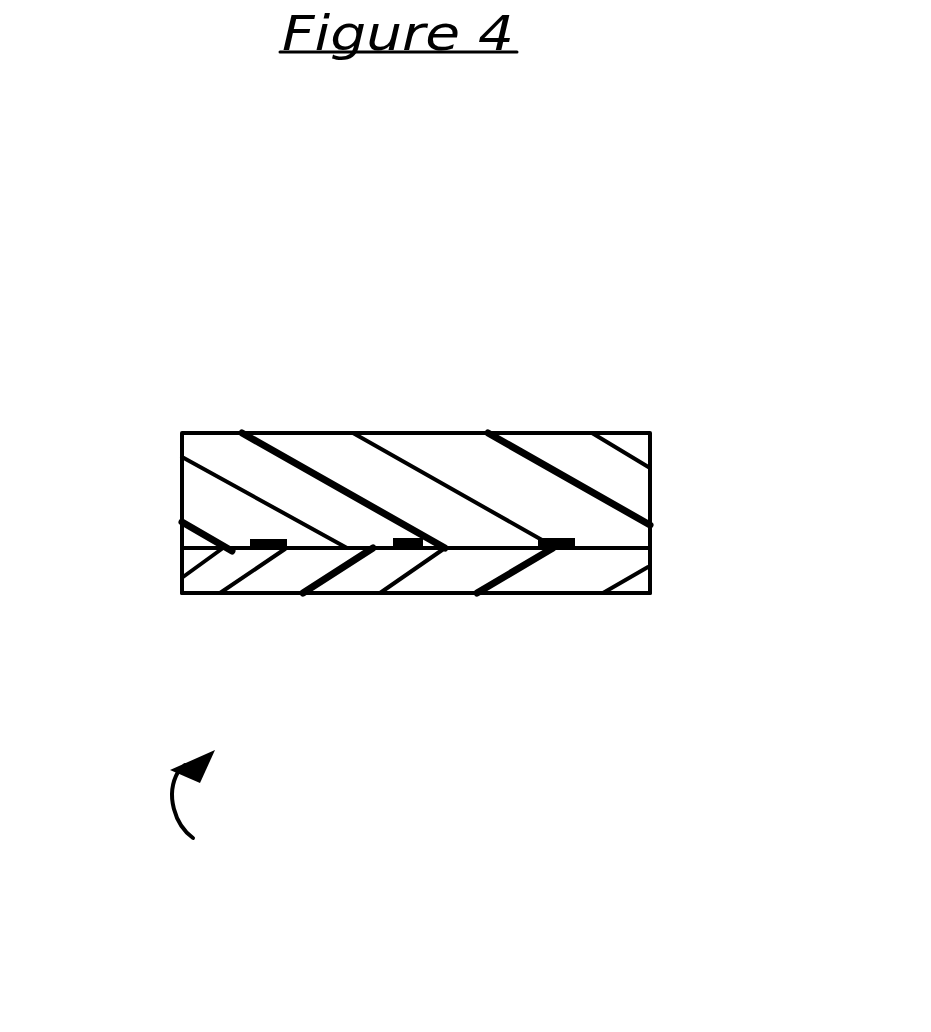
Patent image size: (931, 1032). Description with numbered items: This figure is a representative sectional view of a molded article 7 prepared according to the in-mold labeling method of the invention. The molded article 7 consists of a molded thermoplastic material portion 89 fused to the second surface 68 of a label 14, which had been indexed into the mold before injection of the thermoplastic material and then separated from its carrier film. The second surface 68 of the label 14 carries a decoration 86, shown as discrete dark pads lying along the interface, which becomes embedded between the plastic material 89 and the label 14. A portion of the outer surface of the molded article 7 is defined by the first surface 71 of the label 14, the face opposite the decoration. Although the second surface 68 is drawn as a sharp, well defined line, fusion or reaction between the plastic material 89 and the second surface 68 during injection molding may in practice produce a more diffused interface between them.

The molded article 7 is at (209, 809).
The label 14 is at (630, 562).
The second surface of label 68 is at (475, 548).
The first surface of label 71 is at (568, 593).
The decoration 86 is at (258, 538).
The molded thermoplastic material portion 89 is at (633, 477).